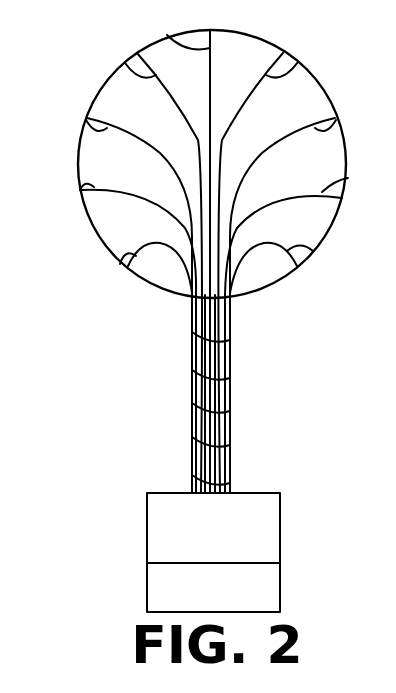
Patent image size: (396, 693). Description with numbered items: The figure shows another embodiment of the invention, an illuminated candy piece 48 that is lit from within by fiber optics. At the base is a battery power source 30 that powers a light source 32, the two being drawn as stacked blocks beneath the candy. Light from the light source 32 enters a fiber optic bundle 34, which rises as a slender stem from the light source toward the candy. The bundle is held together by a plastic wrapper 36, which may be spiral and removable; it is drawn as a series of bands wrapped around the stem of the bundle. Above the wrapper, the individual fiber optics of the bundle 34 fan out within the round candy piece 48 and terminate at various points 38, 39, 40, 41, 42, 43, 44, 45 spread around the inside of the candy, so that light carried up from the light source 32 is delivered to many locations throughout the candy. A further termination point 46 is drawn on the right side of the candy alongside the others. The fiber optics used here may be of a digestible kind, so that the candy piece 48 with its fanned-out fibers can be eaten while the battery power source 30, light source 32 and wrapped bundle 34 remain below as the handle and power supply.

The battery power source 30 is at (281, 584).
The light source 32 is at (281, 519).
The fiber optic bundle 34 is at (213, 357).
The plastic wrapper 36 is at (228, 404).
The termination point 38 is at (126, 268).
The termination point 39 is at (80, 190).
The termination point 40 is at (86, 120).
The termination point 41 is at (125, 63).
The termination point 42 is at (167, 36).
The termination point 43 is at (299, 61).
The termination point 44 is at (334, 105).
The termination point 45 is at (348, 178).
The fiber strand 46 is at (314, 251).
The candy piece 48 is at (133, 322).